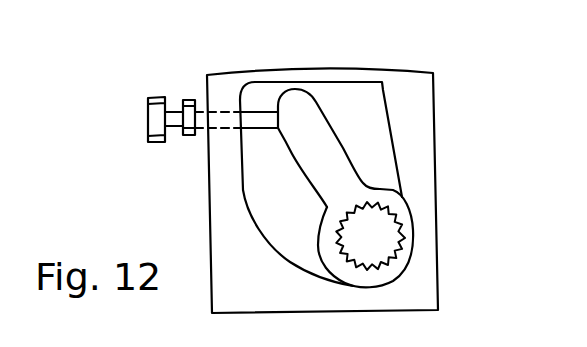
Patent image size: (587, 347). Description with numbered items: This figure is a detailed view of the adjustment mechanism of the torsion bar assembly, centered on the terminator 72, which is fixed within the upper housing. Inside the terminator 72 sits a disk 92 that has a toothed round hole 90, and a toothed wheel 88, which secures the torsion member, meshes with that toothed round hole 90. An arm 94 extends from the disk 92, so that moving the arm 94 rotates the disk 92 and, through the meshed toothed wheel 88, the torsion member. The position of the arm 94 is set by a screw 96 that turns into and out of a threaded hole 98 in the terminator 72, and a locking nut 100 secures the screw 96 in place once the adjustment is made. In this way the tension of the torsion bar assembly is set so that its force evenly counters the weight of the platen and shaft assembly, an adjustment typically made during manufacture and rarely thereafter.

The terminator 72 is at (409, 68).
The toothed wheel 88 is at (368, 240).
The toothed round hole 90 is at (400, 256).
The disk 92 is at (393, 210).
The arm 94 is at (343, 148).
The screw 96 is at (148, 124).
The threaded hole 98 is at (203, 136).
The locking nut 100 is at (191, 98).